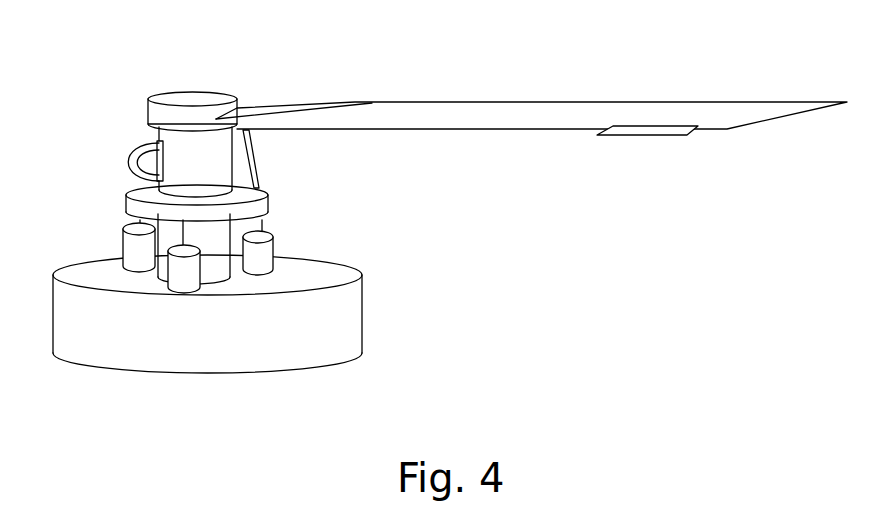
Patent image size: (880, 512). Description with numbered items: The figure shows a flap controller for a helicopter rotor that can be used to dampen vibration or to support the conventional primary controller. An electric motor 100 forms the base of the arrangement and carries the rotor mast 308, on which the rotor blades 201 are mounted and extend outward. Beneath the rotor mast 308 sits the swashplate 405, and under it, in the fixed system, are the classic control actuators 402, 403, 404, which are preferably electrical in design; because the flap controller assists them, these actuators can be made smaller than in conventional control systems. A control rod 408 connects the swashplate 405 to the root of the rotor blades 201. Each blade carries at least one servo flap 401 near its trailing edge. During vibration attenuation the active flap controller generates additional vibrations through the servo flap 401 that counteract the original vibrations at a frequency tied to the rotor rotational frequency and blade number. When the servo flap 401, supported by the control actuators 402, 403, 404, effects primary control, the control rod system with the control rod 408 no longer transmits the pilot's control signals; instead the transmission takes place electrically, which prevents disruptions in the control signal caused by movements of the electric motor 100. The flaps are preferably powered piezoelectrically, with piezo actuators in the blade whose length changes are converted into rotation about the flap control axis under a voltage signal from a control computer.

The electric motor 100 is at (335, 338).
The rotor blades 201 is at (493, 118).
The rotor mast 308 is at (158, 139).
The servo flap 401 is at (652, 128).
The control actuator 402 is at (124, 249).
The control actuator 403 is at (178, 277).
The control actuator 404 is at (263, 263).
The swashplate 405 is at (135, 203).
The control rod 408 is at (256, 157).